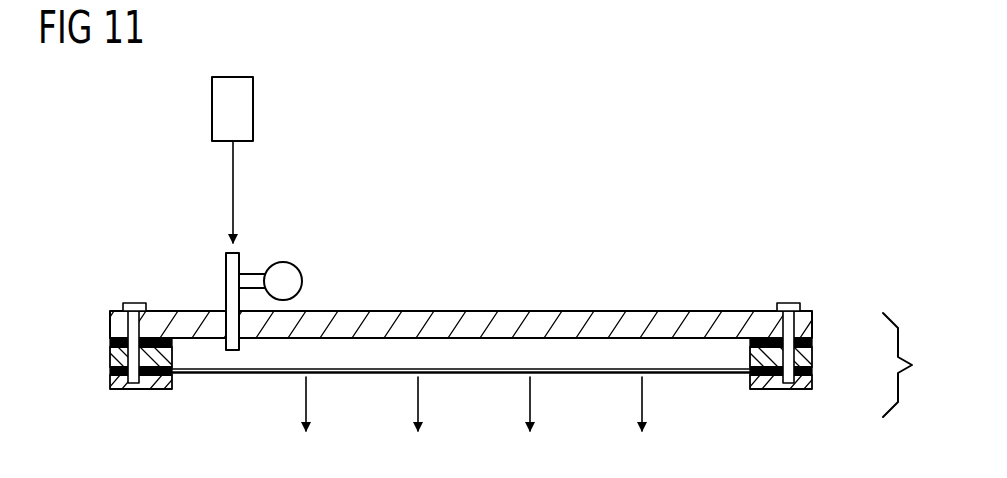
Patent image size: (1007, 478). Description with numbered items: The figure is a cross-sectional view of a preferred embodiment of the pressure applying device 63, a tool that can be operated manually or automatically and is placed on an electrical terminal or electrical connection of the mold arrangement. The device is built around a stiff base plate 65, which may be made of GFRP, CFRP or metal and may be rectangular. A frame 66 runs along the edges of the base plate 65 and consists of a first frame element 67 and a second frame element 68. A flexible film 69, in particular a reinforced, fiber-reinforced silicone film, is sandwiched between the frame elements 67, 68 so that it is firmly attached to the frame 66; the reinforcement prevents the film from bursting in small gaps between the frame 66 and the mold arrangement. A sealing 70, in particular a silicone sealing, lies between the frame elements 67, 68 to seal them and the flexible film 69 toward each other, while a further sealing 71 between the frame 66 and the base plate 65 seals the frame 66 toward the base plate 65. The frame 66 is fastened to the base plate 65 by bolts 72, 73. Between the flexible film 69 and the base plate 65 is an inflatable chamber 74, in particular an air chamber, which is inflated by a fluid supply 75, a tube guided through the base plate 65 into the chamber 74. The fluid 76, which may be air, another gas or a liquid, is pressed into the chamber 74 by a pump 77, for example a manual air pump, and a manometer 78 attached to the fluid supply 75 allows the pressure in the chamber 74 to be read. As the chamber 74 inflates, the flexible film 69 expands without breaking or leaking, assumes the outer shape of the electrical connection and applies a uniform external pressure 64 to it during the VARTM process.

The pressure applying device 63 is at (432, 112).
The external pressure 64 is at (304, 406).
The base plate 65 is at (707, 318).
The frame 66 is at (915, 365).
The first frame element 67 is at (812, 355).
The second frame element 68 is at (812, 378).
The flexible film 69 is at (580, 373).
The sealing 70 is at (110, 377).
The sealing 71 is at (110, 346).
The bolt 72 is at (131, 302).
The bolt 73 is at (788, 301).
The inflatable chamber 74 is at (472, 347).
The fluid supply 75 is at (226, 272).
The fluid 76 is at (233, 177).
The pump 77 is at (212, 109).
The manometer 78 is at (303, 280).